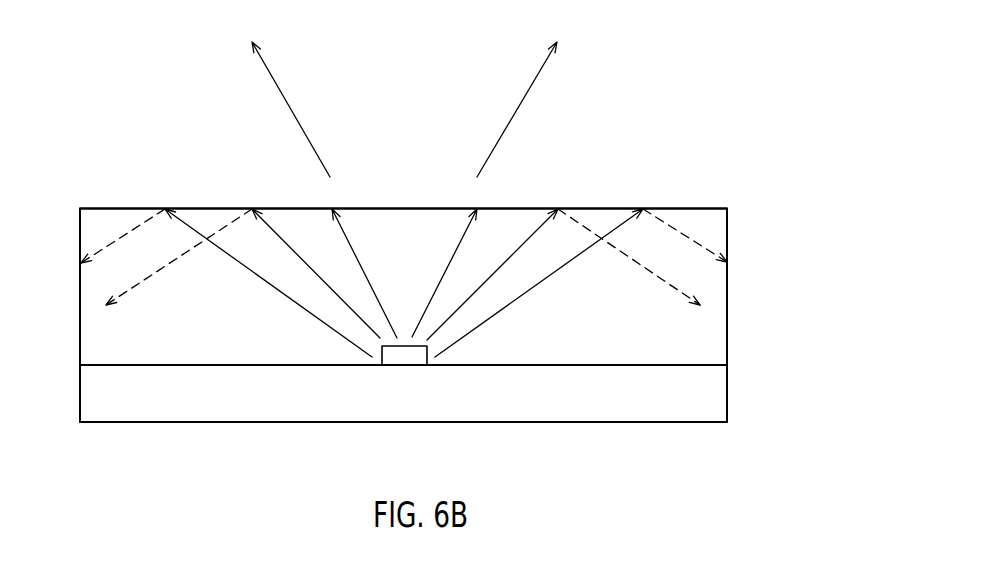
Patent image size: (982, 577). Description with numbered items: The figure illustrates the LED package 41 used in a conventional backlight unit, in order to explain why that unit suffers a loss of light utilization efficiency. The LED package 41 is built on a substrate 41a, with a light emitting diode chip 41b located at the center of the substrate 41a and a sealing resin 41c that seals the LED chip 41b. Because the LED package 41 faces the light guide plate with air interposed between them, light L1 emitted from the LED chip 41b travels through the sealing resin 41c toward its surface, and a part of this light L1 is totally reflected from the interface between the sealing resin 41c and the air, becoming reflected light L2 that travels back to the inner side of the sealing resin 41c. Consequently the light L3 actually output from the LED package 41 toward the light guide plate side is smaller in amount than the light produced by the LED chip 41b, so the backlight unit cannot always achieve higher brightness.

The LED package 41 is at (728, 367).
The substrate 41a is at (713, 399).
The light emitting diode chip 41b is at (404, 365).
The sealing resin 41c is at (713, 321).
The light L1 is at (517, 250).
The reflected light L2 is at (597, 227).
The light output L3 is at (297, 120).